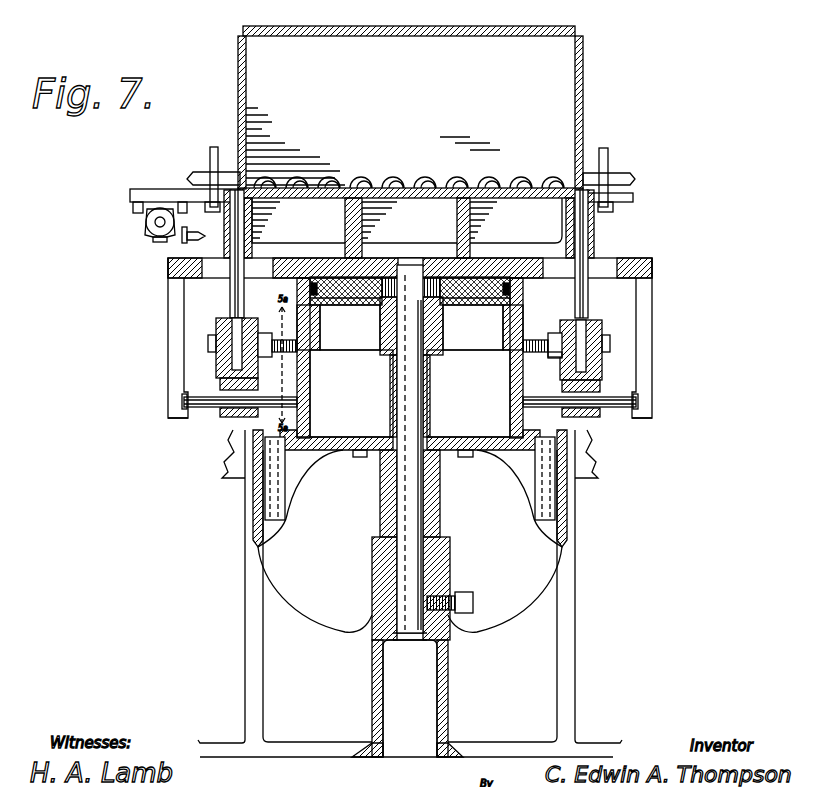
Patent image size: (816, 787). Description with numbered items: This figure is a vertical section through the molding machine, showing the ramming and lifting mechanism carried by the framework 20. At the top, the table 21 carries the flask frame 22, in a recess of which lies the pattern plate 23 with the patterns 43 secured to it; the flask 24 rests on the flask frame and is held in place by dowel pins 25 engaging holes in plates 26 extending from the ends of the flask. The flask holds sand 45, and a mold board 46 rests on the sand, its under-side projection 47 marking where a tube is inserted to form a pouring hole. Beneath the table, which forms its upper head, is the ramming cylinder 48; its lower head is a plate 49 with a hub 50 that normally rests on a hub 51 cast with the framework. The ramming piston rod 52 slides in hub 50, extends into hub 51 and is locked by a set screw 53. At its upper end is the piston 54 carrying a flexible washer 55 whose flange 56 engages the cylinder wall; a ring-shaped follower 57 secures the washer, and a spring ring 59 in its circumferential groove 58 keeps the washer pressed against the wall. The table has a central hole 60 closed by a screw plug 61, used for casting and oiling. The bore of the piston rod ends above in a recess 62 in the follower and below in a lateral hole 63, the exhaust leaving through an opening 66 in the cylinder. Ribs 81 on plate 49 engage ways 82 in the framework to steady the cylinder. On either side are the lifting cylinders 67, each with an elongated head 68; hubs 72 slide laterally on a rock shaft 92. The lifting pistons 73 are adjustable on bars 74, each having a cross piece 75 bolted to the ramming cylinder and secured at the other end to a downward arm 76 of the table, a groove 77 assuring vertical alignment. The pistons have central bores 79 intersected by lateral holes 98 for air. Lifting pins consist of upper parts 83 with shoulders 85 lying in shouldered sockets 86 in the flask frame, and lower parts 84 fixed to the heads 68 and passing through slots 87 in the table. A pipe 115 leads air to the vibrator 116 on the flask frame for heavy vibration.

The framework 20 is at (257, 683).
The table 21 is at (652, 267).
The flask frame 22 is at (516, 220).
The pattern plate 23 is at (427, 181).
The flask 24 is at (282, 27).
The dowel pins 25 is at (211, 148).
The plates 26 is at (193, 174).
The patterns 43 is at (378, 174).
The sand 45 is at (466, 80).
The mold board 46 is at (433, 27).
The projection 47 is at (548, 40).
The ramming cylinder 48 is at (313, 415).
The plate 49 is at (362, 440).
The hub 50 is at (442, 496).
The hub 51 is at (447, 563).
The ramming piston rod 52 is at (397, 496).
The set screw 53 is at (474, 596).
The piston 54 is at (365, 348).
The flexible washer 55 is at (455, 308).
The flange 56 is at (315, 257).
The ring-shaped follower 57 is at (376, 258).
The circumferential groove 58 is at (512, 300).
The spring ring 59 is at (297, 284).
The central hole 60 is at (433, 260).
The screw plug 61 is at (418, 258).
The recess 62 is at (475, 250).
The lateral hole 63 is at (408, 544).
The opening 66 is at (430, 356).
The lifting cylinders 67 is at (216, 360).
The elongated head 68 is at (220, 318).
The hubs 72 is at (553, 352).
The lifting pistons 73 is at (230, 387).
The bars 74 is at (185, 411).
The cross piece 75 is at (312, 397).
The arm 76 is at (170, 302).
The groove 77 is at (208, 411).
The central bores 79 is at (216, 337).
The ribs 81 is at (282, 490).
The ways 82 is at (267, 533).
The upper parts of lifting pins 83 is at (254, 210).
The lower parts of lifting pins 84 is at (232, 297).
The shoulders 85 is at (228, 249).
The shouldered sockets 86 is at (297, 241).
The slots 87 is at (665, 253).
The rock shaft 92 is at (288, 345).
The lateral holes 98 is at (245, 387).
The pipe 115 is at (196, 230).
The vibrator 116 is at (144, 226).